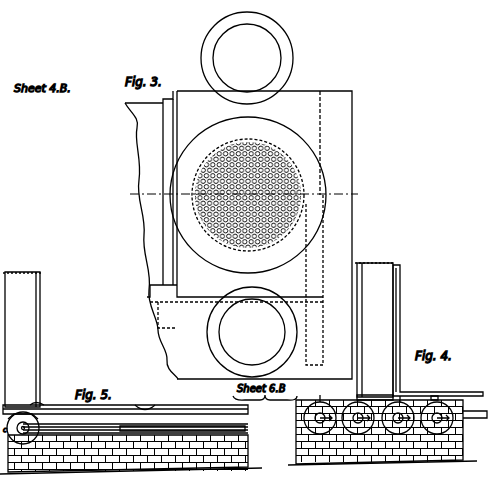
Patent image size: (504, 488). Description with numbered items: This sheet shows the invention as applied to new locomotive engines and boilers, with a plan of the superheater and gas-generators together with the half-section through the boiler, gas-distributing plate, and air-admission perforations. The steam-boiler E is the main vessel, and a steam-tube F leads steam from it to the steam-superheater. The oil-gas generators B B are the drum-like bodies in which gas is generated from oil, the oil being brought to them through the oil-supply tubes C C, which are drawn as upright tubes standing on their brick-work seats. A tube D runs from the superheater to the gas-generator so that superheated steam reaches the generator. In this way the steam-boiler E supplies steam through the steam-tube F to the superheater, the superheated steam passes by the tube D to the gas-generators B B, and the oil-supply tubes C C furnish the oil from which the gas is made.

In FIG. 3, the oil-gas generator B is at (249, 194).
In FIG. 4, the oil-supply tube C is at (421, 340).
In FIG. 5, the oil-supply tube C is at (22, 339).
In FIG. 4, the tube from superheater to gas-generator D is at (414, 393).
In FIG. 4, the steam-boiler E is at (378, 414).
In FIG. 5, the steam-tube to superheater F is at (165, 410).